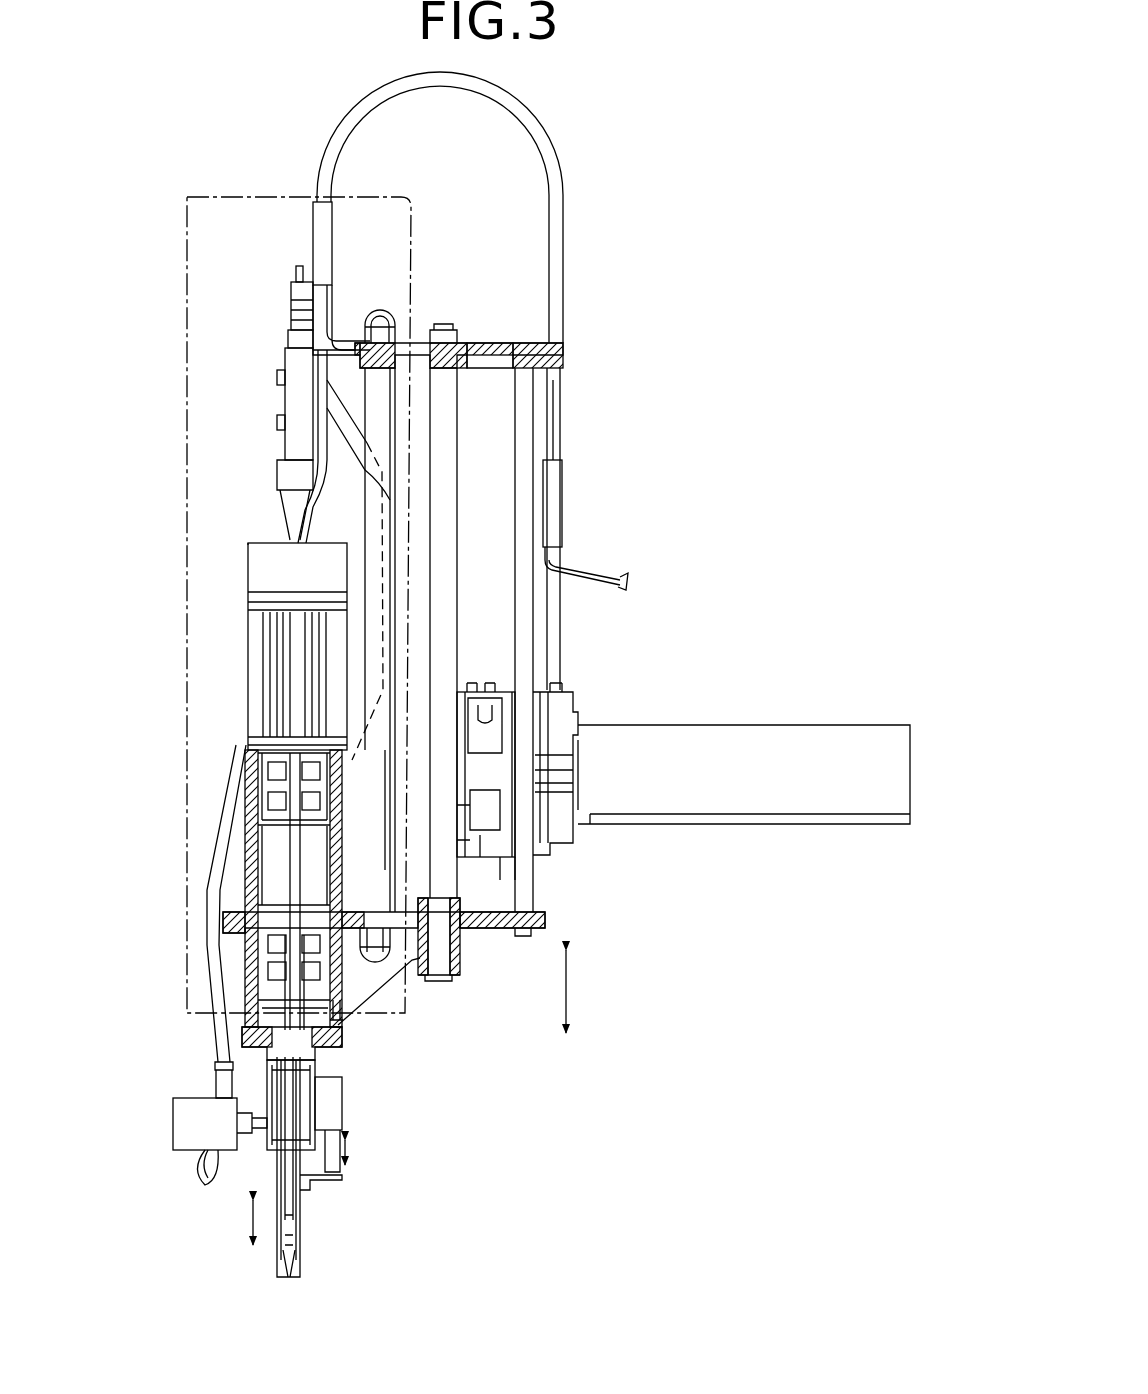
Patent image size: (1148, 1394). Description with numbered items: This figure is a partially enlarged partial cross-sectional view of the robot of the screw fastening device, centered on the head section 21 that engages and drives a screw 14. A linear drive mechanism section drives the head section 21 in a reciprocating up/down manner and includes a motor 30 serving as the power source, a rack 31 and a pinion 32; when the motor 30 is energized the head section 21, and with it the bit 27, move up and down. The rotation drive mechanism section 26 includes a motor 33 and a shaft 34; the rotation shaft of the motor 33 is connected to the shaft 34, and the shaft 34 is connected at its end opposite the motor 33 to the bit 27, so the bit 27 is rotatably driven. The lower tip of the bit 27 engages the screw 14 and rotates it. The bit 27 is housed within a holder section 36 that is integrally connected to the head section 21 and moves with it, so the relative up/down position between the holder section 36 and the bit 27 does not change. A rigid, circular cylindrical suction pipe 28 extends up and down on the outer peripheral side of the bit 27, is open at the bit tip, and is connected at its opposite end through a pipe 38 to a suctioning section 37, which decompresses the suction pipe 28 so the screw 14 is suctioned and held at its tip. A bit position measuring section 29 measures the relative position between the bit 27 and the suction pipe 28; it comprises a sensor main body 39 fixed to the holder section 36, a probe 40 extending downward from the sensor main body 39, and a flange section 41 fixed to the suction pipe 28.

The screw 14 is at (645, 695).
The head section 21 is at (165, 205).
The rotation drive mechanism section 26 is at (225, 528).
The bit 27 is at (290, 1275).
The suction pipe 28 is at (300, 1205).
The bit position measuring section 29 is at (360, 1109).
The motor 30 is at (782, 733).
The rack 31 is at (535, 488).
The pinion 32 is at (563, 843).
The motor 33 is at (247, 640).
The shaft 34 is at (290, 985).
The holder section 36 is at (340, 1023).
The suctioning section 37 is at (205, 943).
The pipe 38 is at (292, 400).
The sensor main body 39 is at (345, 1088).
The probe 40 is at (352, 1153).
The flange section 41 is at (345, 1176).